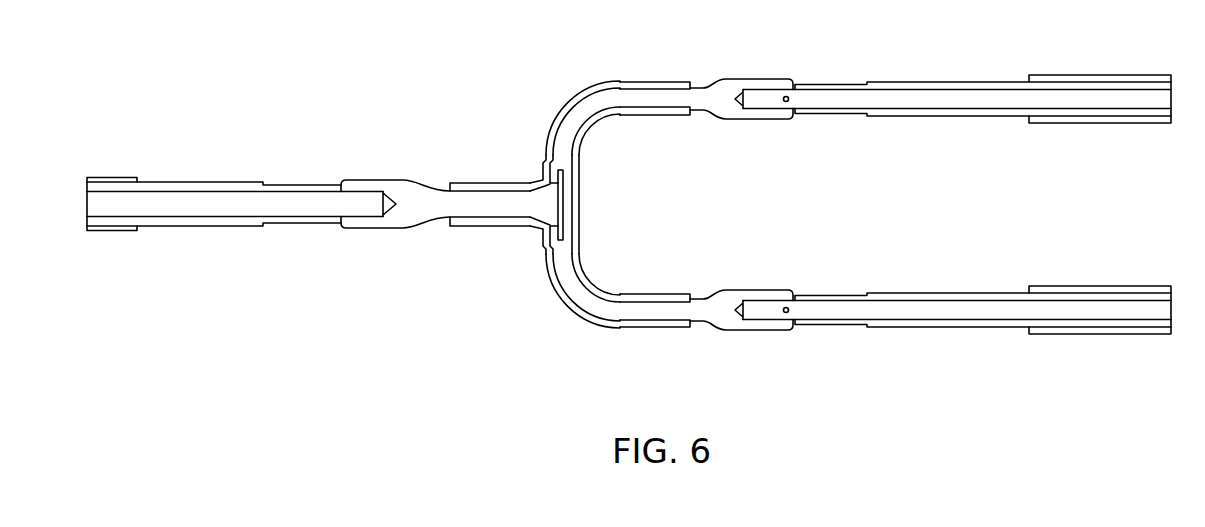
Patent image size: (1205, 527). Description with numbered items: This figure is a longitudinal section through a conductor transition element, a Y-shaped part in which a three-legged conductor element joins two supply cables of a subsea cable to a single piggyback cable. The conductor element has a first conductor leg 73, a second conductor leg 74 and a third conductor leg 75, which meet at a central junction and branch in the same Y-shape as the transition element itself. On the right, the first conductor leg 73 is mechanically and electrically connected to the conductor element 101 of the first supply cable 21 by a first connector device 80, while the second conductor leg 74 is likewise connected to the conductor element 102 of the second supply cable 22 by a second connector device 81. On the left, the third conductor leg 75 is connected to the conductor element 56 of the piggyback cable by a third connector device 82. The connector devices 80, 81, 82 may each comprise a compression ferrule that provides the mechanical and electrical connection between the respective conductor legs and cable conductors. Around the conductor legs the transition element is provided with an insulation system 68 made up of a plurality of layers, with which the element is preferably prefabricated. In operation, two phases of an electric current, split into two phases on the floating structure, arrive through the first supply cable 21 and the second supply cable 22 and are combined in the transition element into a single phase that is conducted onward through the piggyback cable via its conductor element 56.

The first supply cable 21 is at (1062, 334).
The second supply cable 22 is at (1100, 75).
The conductor element of the piggyback cable 56 is at (237, 212).
The insulation system 68 is at (643, 82).
The first conductor leg 73 is at (578, 310).
The second conductor leg 74 is at (576, 100).
The third conductor leg 75 is at (492, 210).
The first connector device 80 is at (752, 332).
The second connector device 81 is at (742, 80).
The third connector device 82 is at (380, 180).
The conductor element of the first supply cable 101 is at (860, 306).
The conductor element of the second supply cable 102 is at (836, 100).